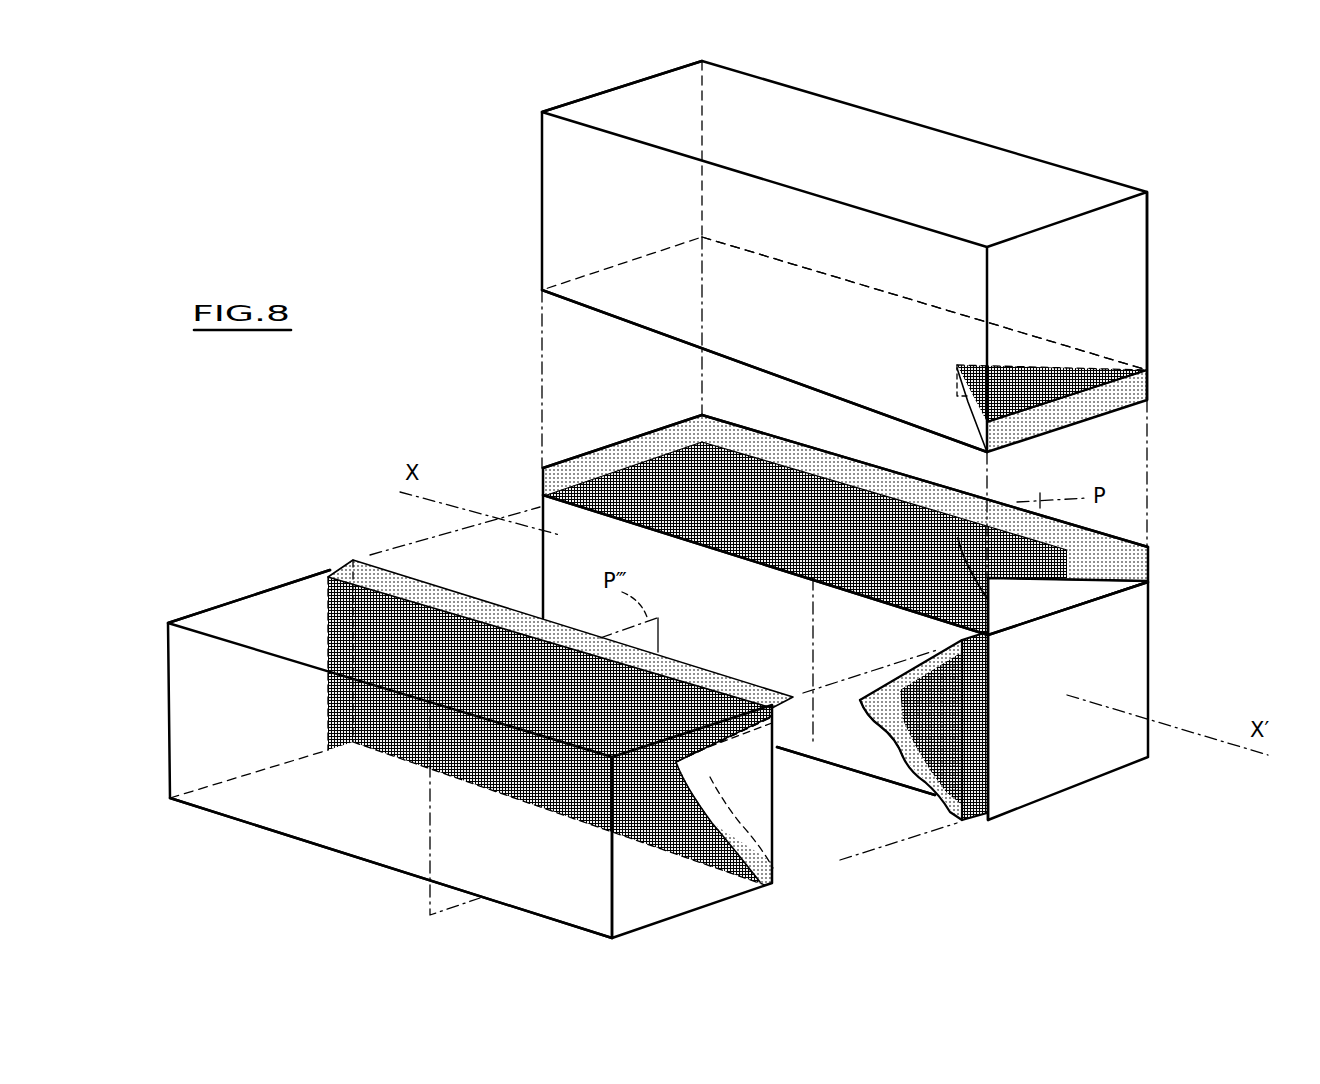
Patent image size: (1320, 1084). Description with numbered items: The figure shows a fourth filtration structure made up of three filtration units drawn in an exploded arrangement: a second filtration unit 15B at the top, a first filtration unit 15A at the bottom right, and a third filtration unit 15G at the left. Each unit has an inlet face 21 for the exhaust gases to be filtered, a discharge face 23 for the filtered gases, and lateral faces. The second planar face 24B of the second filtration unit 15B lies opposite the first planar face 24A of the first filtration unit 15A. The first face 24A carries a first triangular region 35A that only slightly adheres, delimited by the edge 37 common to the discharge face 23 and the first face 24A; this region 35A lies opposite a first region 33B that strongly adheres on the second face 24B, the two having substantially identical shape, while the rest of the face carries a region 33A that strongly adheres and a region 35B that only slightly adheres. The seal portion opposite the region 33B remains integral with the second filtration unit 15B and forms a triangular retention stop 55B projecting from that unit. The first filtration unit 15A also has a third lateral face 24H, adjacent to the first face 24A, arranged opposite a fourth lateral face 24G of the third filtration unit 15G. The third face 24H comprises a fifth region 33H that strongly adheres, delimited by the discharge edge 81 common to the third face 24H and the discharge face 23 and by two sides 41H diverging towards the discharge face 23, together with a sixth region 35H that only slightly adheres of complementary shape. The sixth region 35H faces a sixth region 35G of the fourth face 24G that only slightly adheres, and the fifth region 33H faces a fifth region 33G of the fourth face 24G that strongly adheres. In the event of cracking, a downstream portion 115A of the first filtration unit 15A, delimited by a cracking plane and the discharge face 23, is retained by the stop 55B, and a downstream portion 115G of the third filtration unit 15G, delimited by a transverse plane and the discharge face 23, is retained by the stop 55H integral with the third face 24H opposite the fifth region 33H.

The second filtration unit 15B is at (926, 104).
The first filtration unit 15A is at (920, 810).
The third filtration unit 15G is at (176, 584).
The inlet face 21 is at (584, 98).
The discharge face 23 is at (1125, 285).
The second planar face 24B is at (648, 336).
The first planar face 24A is at (820, 478).
The fourth lateral face 24G is at (408, 570).
The third lateral face 24H is at (855, 732).
The first region that strongly adheres 33B is at (1038, 381).
The region that strongly adheres 33A is at (884, 510).
The fifth region that strongly adheres 33G is at (467, 752).
The fifth region that strongly adheres 33H is at (965, 720).
The region that only slightly adheres 35B is at (810, 290).
The first triangular region that only slightly adheres 35A is at (1040, 603).
The sixth region that only slightly adheres 35H is at (577, 567).
The sixth region that only slightly adheres 35G is at (747, 788).
The common edge 37 is at (1118, 595).
The sides 41H is at (917, 678).
The triangular retention stop 55B is at (1120, 404).
The retention stop 55H is at (968, 765).
The discharge edge 81 is at (988, 663).
The downstream portion of the first filtration unit 115A is at (867, 752).
The downstream portion of the third filtration unit 115G is at (548, 870).